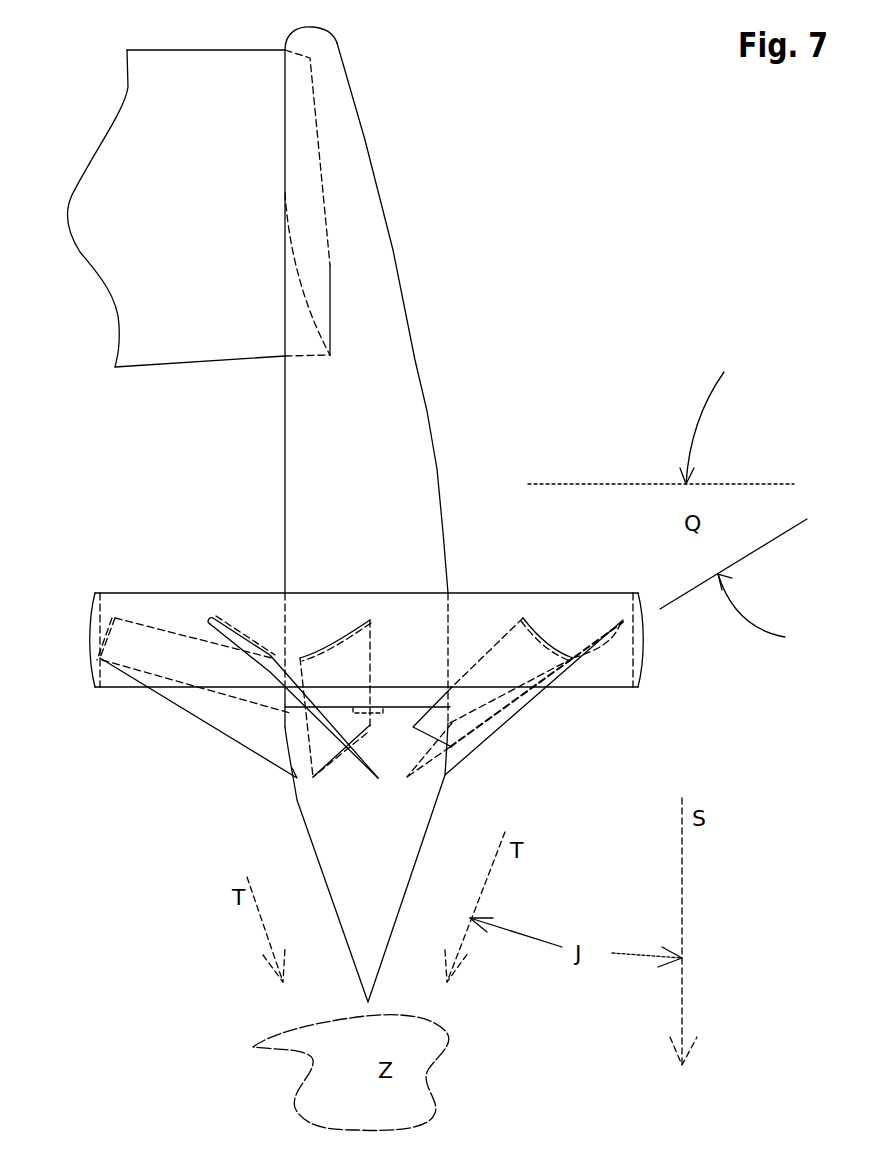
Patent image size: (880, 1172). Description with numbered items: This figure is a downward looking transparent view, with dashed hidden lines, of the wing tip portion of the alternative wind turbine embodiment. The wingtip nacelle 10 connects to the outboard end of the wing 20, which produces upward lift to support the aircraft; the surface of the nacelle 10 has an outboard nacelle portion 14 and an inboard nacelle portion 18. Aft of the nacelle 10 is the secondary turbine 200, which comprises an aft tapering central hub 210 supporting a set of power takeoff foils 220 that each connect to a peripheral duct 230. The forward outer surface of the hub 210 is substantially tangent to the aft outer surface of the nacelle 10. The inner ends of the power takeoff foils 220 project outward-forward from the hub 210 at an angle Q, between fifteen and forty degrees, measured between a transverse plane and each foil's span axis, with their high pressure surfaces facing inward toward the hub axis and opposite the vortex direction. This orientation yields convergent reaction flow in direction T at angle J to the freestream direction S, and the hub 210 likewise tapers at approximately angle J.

The wingtip nacelle 10 is at (502, 288).
The outboard nacelle portion 14 is at (427, 411).
The inboard nacelle portion 18 is at (285, 428).
The wing 20 is at (175, 367).
The secondary turbine 200 is at (527, 763).
The central hub 210 is at (303, 828).
The power takeoff foil 220 is at (217, 732).
The peripheral duct 230 is at (180, 592).